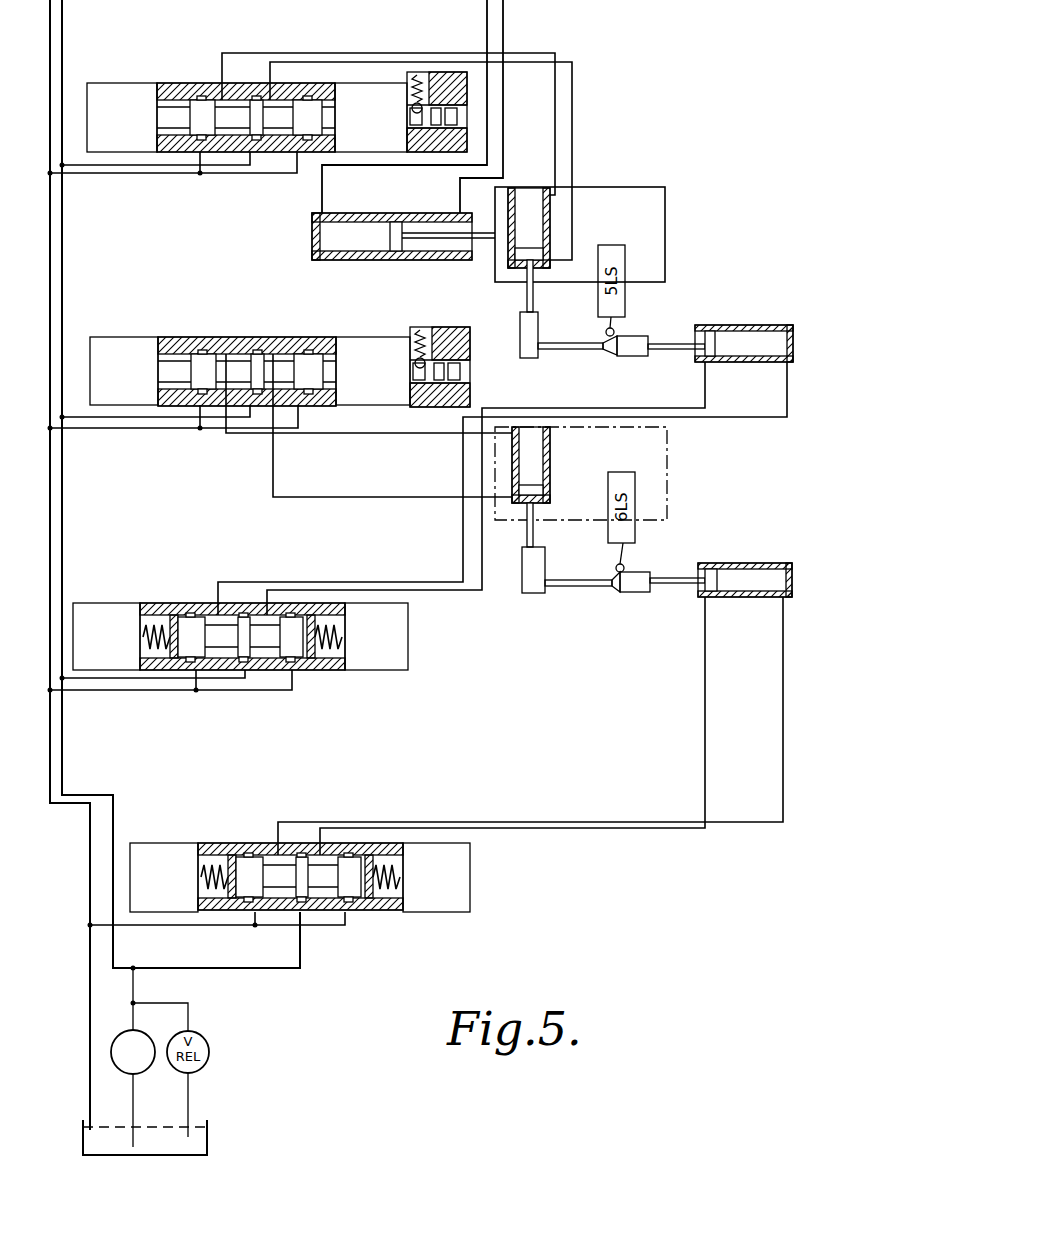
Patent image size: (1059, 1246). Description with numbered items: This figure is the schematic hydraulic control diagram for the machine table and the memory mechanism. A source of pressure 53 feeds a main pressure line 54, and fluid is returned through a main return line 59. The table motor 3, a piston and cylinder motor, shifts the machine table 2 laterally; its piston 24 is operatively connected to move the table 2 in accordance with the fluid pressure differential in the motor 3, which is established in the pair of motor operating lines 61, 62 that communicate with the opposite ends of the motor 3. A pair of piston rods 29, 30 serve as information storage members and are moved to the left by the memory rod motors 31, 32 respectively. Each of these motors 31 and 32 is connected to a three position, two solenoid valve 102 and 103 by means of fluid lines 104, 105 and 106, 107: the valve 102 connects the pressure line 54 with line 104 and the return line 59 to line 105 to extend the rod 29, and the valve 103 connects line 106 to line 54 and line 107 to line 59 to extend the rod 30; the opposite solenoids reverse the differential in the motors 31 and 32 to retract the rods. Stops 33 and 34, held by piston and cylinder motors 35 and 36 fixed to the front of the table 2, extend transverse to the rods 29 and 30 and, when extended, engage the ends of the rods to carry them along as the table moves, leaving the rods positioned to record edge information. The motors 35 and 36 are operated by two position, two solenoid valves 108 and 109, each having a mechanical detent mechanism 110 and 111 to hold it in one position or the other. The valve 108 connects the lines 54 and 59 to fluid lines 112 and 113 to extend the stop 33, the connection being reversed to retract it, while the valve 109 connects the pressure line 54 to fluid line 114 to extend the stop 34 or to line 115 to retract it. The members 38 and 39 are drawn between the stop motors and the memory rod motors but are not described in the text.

The table 2 is at (693, 470).
The table motor 3 is at (403, 231).
The piston 24 is at (388, 247).
The piston rod 29 is at (682, 340).
The piston rod 30 is at (687, 575).
The memory rod motor 31 is at (773, 327).
The memory rod motor 32 is at (777, 565).
The stop 33 is at (547, 322).
The stop 34 is at (548, 552).
The piston and cylinder motor 35 is at (512, 250).
The piston and cylinder motor 36 is at (548, 466).
The cam member 38 is at (627, 357).
The cam member 39 is at (632, 592).
The source of pressure 53 is at (118, 1068).
The main pressure line 54 is at (115, 802).
The main return line 59 is at (90, 850).
The motor operating line 61 is at (505, 32).
The motor operating line 62 is at (488, 32).
The three position two solenoid valve 102 is at (192, 603).
The three position two solenoid valve 103 is at (248, 843).
The fluid line 104 is at (328, 582).
The fluid line 105 is at (472, 588).
The fluid line 106 is at (347, 822).
The fluid line 107 is at (603, 829).
The two position two solenoid valve 108 is at (210, 83).
The two position two solenoid valve 109 is at (231, 337).
The mechanical detent mechanism 110 is at (448, 97).
The mechanical detent mechanism 111 is at (447, 331).
The fluid line 112 is at (282, 53).
The fluid line 113 is at (391, 62).
The fluid line 114 is at (393, 437).
The fluid line 115 is at (392, 438).